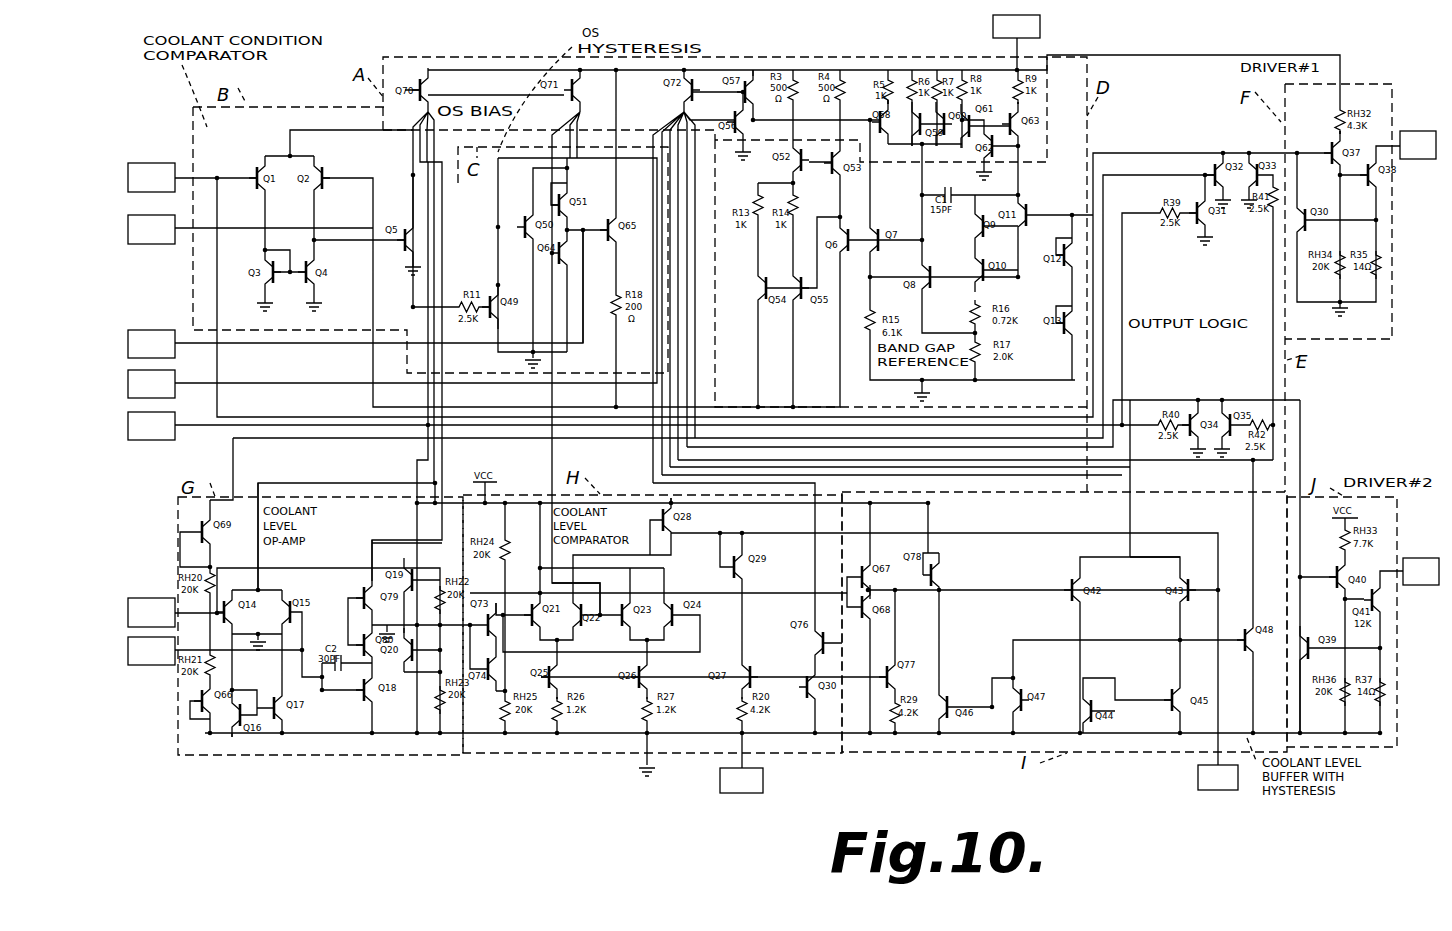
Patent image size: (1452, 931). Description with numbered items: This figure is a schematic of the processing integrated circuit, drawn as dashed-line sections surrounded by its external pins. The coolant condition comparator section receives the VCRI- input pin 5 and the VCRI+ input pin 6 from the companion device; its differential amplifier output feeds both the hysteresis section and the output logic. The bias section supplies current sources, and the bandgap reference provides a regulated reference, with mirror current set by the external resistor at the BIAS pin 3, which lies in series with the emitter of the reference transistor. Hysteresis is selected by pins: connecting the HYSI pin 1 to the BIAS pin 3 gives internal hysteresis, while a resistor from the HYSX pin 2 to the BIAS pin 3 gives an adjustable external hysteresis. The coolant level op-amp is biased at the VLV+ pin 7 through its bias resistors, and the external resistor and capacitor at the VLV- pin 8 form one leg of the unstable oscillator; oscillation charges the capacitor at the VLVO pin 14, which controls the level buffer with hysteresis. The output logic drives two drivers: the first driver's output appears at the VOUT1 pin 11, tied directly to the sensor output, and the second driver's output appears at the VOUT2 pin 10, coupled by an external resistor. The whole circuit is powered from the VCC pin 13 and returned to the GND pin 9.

The HYSI pin 1 is at (151, 344).
The HYSX pin 2 is at (151, 384).
The BIAS pin 3 is at (151, 426).
The VCRI- input pin 5 is at (151, 177).
The VCRI+ input pin 6 is at (151, 229).
The VLV+ pin 7 is at (151, 651).
The VLV- pin 8 is at (151, 612).
The GND pin 9 is at (741, 780).
The VOUT2 pin 10 is at (1421, 571).
The VOUT1 pin 11 is at (1418, 145).
The VCC pin 13 is at (1016, 26).
The VLVO pin 14 is at (1218, 777).